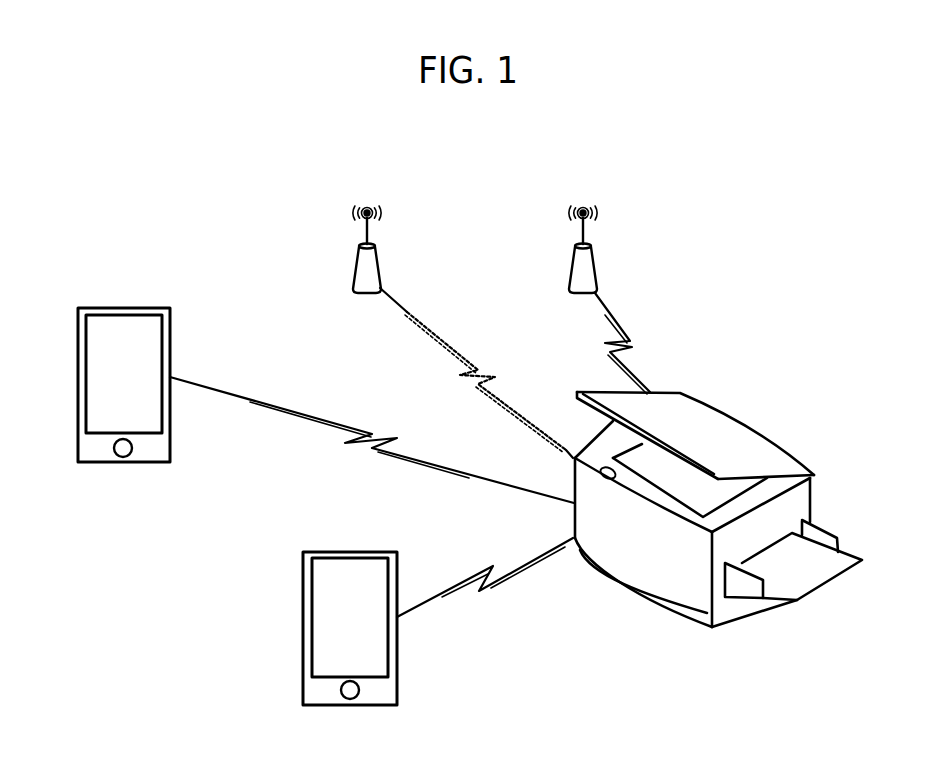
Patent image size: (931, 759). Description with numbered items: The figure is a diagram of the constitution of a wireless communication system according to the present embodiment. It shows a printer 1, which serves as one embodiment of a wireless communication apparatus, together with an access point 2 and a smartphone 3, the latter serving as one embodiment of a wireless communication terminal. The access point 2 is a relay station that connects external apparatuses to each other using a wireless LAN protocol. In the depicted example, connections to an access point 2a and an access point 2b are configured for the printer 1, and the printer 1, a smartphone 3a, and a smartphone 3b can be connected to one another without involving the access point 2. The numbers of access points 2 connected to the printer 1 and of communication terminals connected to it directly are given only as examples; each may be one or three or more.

The printer 1 is at (687, 395).
The access point 2 is at (518, 249).
The access point 2a is at (377, 265).
The access point 2b is at (593, 265).
The smartphone 3 is at (264, 491).
The smartphone 3a is at (130, 307).
The smartphone 3b is at (360, 550).